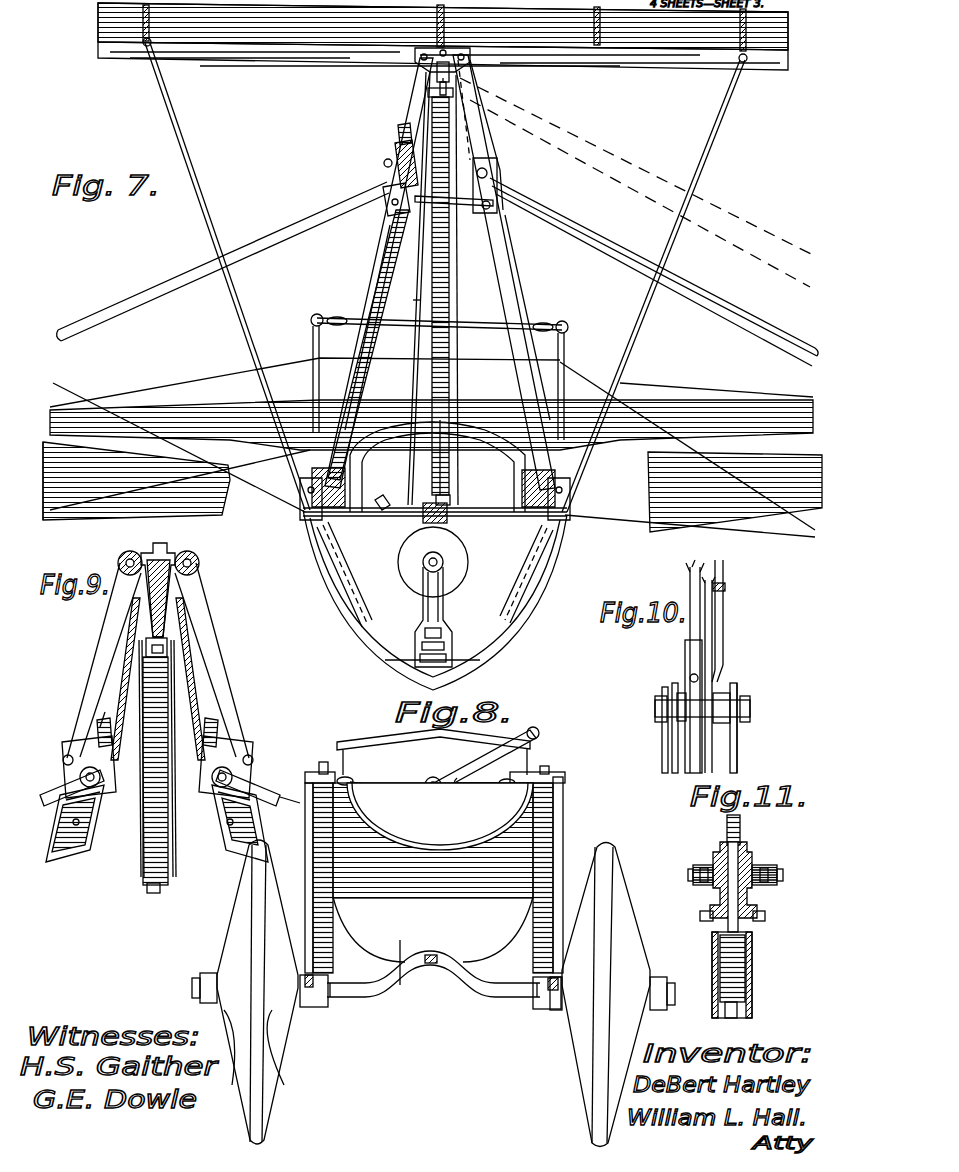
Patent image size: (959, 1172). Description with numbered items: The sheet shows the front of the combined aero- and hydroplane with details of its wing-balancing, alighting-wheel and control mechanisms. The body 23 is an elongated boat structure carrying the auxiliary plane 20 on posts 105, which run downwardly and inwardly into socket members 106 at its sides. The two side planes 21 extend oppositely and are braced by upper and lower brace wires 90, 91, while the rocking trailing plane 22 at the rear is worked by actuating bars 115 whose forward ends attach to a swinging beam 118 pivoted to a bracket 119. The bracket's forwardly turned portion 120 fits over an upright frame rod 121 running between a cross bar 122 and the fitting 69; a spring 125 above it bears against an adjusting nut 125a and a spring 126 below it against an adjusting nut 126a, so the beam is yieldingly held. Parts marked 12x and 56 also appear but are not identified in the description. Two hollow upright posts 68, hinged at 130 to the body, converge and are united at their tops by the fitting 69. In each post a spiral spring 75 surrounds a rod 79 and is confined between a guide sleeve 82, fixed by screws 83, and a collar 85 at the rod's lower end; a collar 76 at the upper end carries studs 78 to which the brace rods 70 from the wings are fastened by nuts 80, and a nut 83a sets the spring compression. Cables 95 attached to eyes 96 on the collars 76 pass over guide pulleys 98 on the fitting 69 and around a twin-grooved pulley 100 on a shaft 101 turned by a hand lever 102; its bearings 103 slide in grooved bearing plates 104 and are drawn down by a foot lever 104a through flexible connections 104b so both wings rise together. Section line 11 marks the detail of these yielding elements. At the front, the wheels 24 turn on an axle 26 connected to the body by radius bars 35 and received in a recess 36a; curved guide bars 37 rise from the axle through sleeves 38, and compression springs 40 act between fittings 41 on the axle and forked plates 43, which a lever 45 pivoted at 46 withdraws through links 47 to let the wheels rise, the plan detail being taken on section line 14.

In FIG. 7, the auxiliary plane 20 is at (545, 15).
In FIG. 7, the fitting 69 is at (432, 72).
In FIG. 9, the fitting 69 is at (168, 560).
In FIG. 7, the posts 105 is at (190, 152).
In FIG. 7, the adjusting nut 125a is at (425, 92).
In FIG. 9, the adjusting nut 125a is at (145, 650).
In FIG. 7, the spring 125 is at (410, 135).
In FIG. 9, the spring 125 is at (170, 700).
In FIG. 7, the spring 126 is at (432, 395).
In FIG. 9, the spring 126 is at (150, 885).
In FIG. 7, the adjusting nut 126a is at (446, 495).
In FIG. 7, the cables 95 is at (487, 115).
In FIG. 9, the cables 95 is at (103, 615).
In FIG. 7, the bracket 119 is at (450, 250).
In FIG. 7, the upright posts 68 is at (372, 247).
In FIG. 9, the upright posts 68 is at (50, 912).
In FIG. 7, the swinging beam 118 is at (518, 290).
In FIG. 7, the spiral springs 75 is at (385, 292).
In FIG. 9, the spiral springs 75 is at (237, 858).
In FIG. 11, the spiral springs 75 is at (720, 978).
In FIG. 7, the nuts 83a is at (410, 165).
In FIG. 9, the nuts 83a is at (90, 740).
In FIG. 11, the nuts 83a is at (723, 848).
In FIG. 7, the rods 79 is at (400, 160).
In FIG. 9, the rods 79 is at (212, 720).
In FIG. 11, the rods 79 is at (727, 822).
In FIG. 7, the collars 76 is at (395, 183).
In FIG. 9, the collars 76 is at (85, 755).
In FIG. 11, the collars 76 is at (750, 850).
In FIG. 7, the guide sleeves 82 is at (385, 195).
In FIG. 9, the guide sleeves 82 is at (87, 812).
In FIG. 11, the guide sleeves 82 is at (714, 937).
In FIG. 7, the forwardly turned portion 120 is at (425, 208).
In FIG. 7, the rod 12x is at (406, 302).
In FIG. 7, the brace rods 70 is at (113, 305).
In FIG. 9, the brace rods 70 is at (60, 787).
In FIG. 11, the brace rods 70 is at (700, 866).
In FIG. 7, the actuating bars 115 is at (314, 345).
In FIG. 7, the trailing plane 22 is at (240, 430).
In FIG. 7, the side planes 21 is at (92, 475).
In FIG. 7, the upper brace wires 90 is at (77, 385).
In FIG. 7, the lower brace wires 91 is at (55, 517).
In FIG. 7, the body 23 is at (485, 630).
In FIG. 8, the body 23 is at (400, 945).
In FIG. 7, the collars 85 is at (355, 445).
In FIG. 7, the hand lever 102 is at (385, 525).
In FIG. 10, the hand lever 102 is at (728, 612).
In FIG. 7, the upright frame rod 121 is at (430, 455).
In FIG. 9, the upright frame rod 121 is at (160, 893).
In FIG. 7, the cross bar 122 is at (380, 500).
In FIG. 7, the hinge 130 is at (310, 490).
In FIG. 7, the rod anchor 56 is at (303, 520).
In FIG. 7, the socket members 106 is at (342, 572).
In FIG. 7, the twin-grooved pulley 100 is at (462, 575).
In FIG. 10, the twin-grooved pulley 100 is at (693, 660).
In FIG. 7, the shaft 101 is at (428, 566).
In FIG. 10, the shaft 101 is at (750, 705).
In FIG. 7, the bearing plates 104 is at (422, 603).
In FIG. 10, the bearing plates 104 is at (740, 748).
In FIG. 7, the bearings 103 is at (450, 592).
In FIG. 10, the bearings 103 is at (662, 692).
In FIG. 7, the flexible connections 104b is at (448, 628).
In FIG. 10, the flexible connections 104b is at (665, 742).
In FIG. 7, the foot lever 104a is at (428, 648).
In FIG. 9, the guide pulleys 98 is at (122, 556).
In FIG. 9, the section line 11— 11 is at (62, 890).
In FIG. 9, the studs 78 is at (232, 770).
In FIG. 11, the studs 78 is at (778, 877).
In FIG. 9, the eyes 96 is at (66, 757).
In FIG. 9, the forked plates 43 is at (293, 802).
In FIG. 8, the forked plates 43 is at (565, 785).
In FIG. 9, the section line 14— 14 is at (290, 778).
In FIG. 8, the section line 14— 14 is at (385, 785).
In FIG. 9, the sleeves 38 is at (305, 822).
In FIG. 8, the sleeves 38 is at (560, 815).
In FIG. 9, the screws 83 is at (73, 821).
In FIG. 11, the screws 83 is at (700, 916).
In FIG. 8, the lever 45 is at (465, 775).
In FIG. 8, the pivot 46 is at (435, 795).
In FIG. 8, the links 47 is at (397, 792).
In FIG. 8, the guide and supporting bars 37 is at (547, 770).
In FIG. 8, the compression springs 40 is at (335, 912).
In FIG. 8, the recess 36a is at (372, 933).
In FIG. 8, the front axle 26 is at (475, 985).
In FIG. 8, the fittings 41 is at (330, 985).
In FIG. 8, the radius bars 35 is at (313, 1008).
In FIG. 8, the front wheels 24 is at (282, 1058).
In FIG. 11, the nuts 80 is at (772, 862).